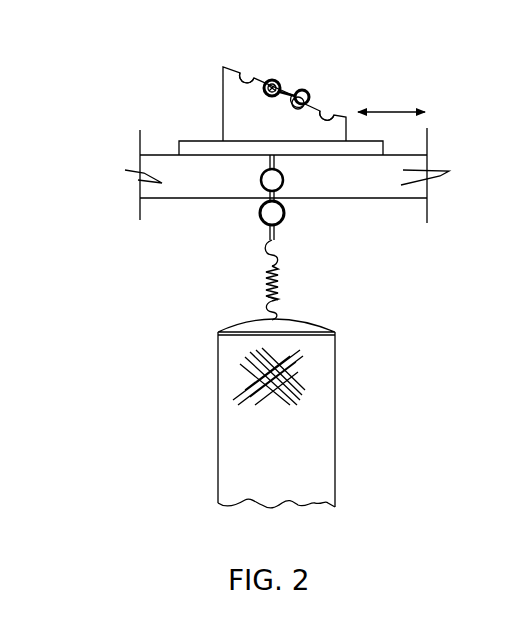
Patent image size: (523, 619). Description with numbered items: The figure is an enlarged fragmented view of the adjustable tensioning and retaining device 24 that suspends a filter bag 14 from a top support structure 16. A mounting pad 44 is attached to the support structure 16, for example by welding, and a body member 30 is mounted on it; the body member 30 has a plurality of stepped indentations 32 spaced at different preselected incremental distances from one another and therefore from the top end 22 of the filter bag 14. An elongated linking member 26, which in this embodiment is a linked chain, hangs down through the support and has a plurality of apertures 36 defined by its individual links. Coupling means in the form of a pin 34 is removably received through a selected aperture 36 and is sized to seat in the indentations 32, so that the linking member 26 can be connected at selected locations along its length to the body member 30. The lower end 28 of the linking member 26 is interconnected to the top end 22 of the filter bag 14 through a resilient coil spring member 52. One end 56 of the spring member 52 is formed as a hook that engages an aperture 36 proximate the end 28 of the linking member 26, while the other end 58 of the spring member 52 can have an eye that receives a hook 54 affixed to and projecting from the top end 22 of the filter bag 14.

The filter bag 14 is at (315, 450).
The top support structure 16 is at (405, 170).
The top end of the filter bag 22 is at (317, 326).
The adjustable tensioning and retaining device 24 is at (135, 285).
The elongated linking member 26 is at (336, 204).
The end of the linking member 28 is at (280, 232).
The body member 30 is at (212, 97).
The stepped indentations 32 is at (247, 80).
The pin 34 is at (282, 85).
The apertures 36 is at (260, 216).
The mounting pad 44 is at (208, 139).
The coil spring member 52 is at (266, 281).
The hook 54 is at (280, 296).
The end of the coil spring member 56 is at (283, 247).
The other end of the coil spring member 58 is at (273, 304).